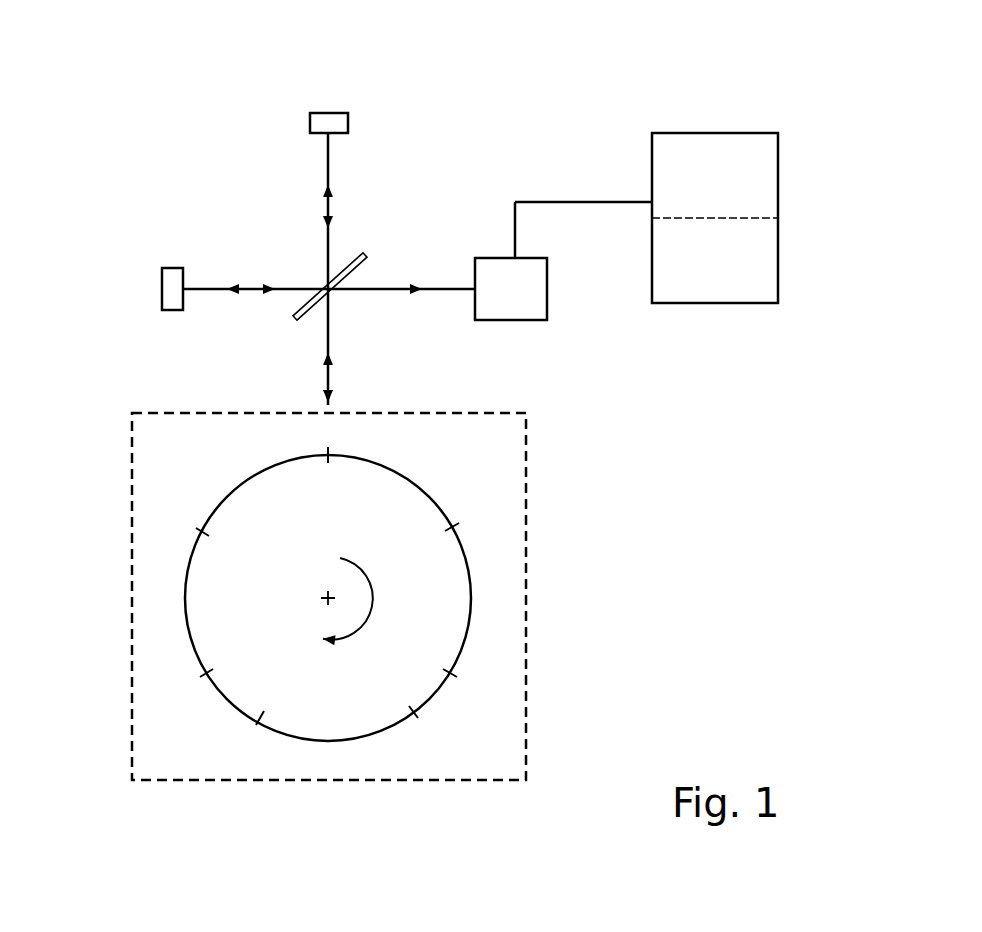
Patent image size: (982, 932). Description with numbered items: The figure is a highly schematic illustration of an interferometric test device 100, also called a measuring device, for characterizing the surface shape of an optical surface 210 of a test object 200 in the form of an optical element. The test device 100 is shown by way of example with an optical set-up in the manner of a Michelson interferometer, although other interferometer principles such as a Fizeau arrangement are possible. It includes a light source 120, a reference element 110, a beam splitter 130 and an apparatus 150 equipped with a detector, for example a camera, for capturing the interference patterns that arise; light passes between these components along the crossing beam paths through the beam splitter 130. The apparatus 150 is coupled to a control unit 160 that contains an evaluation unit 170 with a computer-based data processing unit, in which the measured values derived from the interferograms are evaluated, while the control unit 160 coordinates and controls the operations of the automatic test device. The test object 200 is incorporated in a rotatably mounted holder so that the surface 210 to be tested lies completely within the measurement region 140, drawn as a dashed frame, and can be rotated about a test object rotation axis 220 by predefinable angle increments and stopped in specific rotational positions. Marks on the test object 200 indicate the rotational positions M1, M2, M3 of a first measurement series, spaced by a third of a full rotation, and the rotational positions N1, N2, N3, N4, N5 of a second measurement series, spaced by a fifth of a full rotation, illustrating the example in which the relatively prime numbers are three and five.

The test device 100 is at (222, 168).
The light source 110 is at (327, 122).
The reference element 120 is at (172, 288).
The beam splitter 130 is at (355, 250).
The measurement region 140 is at (528, 433).
The apparatus equipped with a detector 150 is at (536, 308).
The control unit 160 is at (752, 272).
The evaluation unit 170 is at (752, 185).
The test object 200 is at (467, 632).
The optical surface 210 is at (443, 600).
The test object rotation axis 220 is at (325, 596).
The rotational position of the second measurement series N1 is at (306, 443).
The rotational position of the second measurement series N2 is at (472, 521).
The rotational position of the second measurement series N3 is at (430, 731).
The rotational position of the second measurement series N4 is at (244, 736).
The rotational position of the second measurement series N5 is at (183, 526).
The rotational position of the first measurement series M1 is at (355, 443).
The rotational position of the first measurement series M2 is at (473, 686).
The rotational position of the first measurement series M3 is at (185, 686).